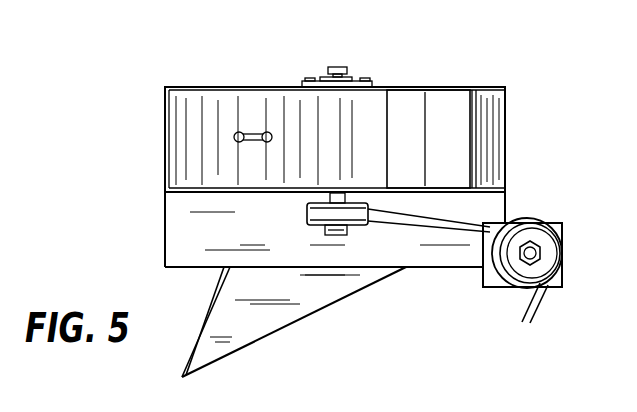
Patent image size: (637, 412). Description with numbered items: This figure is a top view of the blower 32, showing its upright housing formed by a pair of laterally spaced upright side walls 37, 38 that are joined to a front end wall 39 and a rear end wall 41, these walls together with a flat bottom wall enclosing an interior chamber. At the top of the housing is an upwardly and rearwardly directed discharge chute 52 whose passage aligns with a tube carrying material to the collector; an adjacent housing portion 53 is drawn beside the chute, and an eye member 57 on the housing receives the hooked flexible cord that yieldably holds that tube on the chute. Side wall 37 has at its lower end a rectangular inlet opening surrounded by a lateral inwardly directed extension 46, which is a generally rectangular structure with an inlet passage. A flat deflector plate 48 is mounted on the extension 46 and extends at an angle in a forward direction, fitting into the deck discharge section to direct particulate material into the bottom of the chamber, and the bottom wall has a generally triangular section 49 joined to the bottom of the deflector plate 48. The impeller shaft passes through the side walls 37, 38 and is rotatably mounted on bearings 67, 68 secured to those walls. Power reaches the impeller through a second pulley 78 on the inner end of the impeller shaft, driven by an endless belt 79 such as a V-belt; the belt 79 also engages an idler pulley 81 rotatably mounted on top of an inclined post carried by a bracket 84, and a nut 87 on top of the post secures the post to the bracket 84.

The blower 32 is at (262, 72).
The side wall 38 is at (178, 87).
The front end wall 39 is at (180, 147).
The eye member 57 is at (265, 132).
The bearing 68 is at (355, 82).
The motor housing panel 53 is at (433, 110).
The discharge chute 52 is at (475, 130).
The rear end wall 41 is at (492, 147).
The side wall 37 is at (183, 193).
The extension 46 is at (180, 250).
The bearing 67 is at (300, 197).
The second pulley 78 is at (320, 225).
The endless belt 79 is at (410, 220).
The bracket 84 is at (492, 282).
The nut 87 is at (530, 240).
The idler pulley 81 is at (528, 280).
The deflector plate 48 is at (212, 312).
The triangular section 49 is at (290, 302).